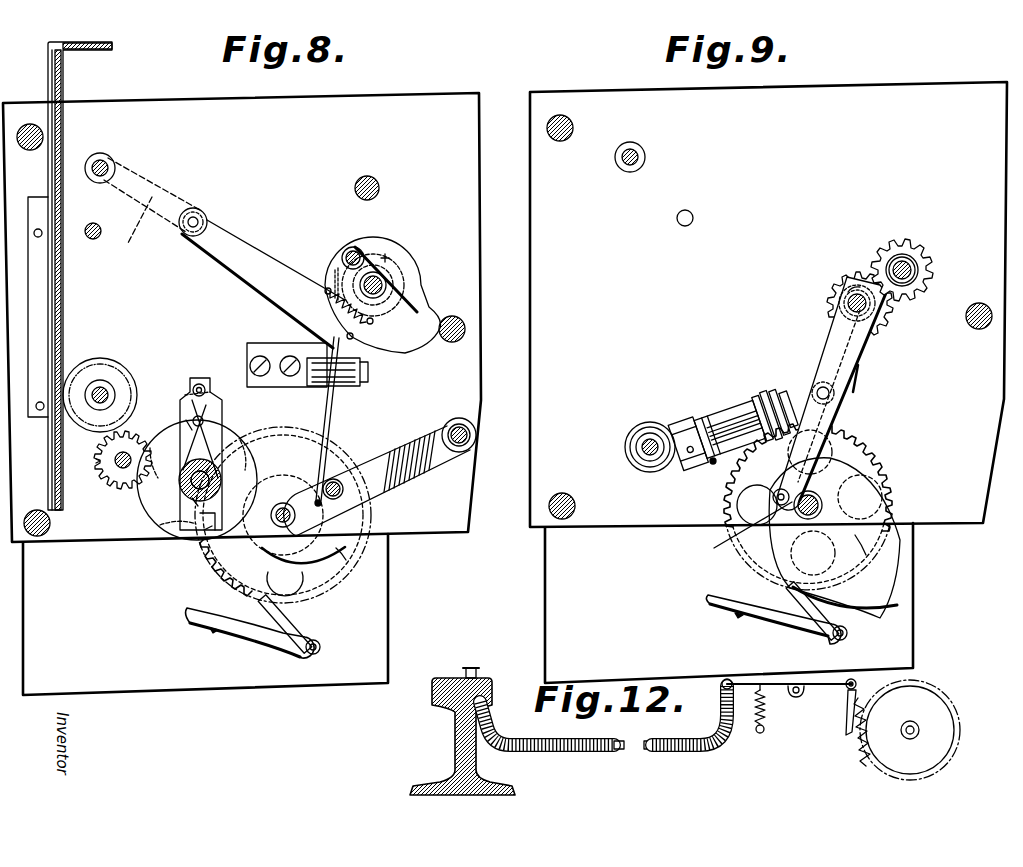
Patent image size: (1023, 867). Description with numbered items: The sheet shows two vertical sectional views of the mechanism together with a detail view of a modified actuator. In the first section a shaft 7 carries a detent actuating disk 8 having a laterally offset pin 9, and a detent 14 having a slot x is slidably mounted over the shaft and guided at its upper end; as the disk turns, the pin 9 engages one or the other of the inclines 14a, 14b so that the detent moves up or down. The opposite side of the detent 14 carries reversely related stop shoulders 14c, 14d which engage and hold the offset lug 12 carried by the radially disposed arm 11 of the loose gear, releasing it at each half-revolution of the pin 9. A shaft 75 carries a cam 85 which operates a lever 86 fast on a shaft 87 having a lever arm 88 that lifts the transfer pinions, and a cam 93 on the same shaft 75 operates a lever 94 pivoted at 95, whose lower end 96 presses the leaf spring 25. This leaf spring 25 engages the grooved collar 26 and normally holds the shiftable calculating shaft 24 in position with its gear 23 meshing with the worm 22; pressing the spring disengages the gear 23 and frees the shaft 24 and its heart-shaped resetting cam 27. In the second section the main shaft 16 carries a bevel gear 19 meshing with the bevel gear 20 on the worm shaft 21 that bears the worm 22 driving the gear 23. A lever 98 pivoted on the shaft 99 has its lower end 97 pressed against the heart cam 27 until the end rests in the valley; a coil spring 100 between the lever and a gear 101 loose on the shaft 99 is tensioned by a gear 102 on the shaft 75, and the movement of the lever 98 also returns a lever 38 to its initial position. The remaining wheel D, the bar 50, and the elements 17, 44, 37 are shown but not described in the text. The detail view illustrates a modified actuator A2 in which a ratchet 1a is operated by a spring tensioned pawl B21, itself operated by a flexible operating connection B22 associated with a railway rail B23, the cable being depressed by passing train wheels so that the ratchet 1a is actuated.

In FIG. 8, the vertical bar 50 is at (48, 78).
In FIG. 8, the wheel D is at (110, 362).
In FIG. 8, the main shaft 16 is at (118, 470).
In FIG. 9, the main shaft 16 is at (650, 458).
In FIG. 8, the pinion gear 17 is at (100, 461).
In FIG. 8, the detent 14 is at (182, 392).
In FIG. 8, the slot x is at (201, 381).
In FIG. 8, the stop shoulder 14c is at (190, 424).
In FIG. 8, the offset lug 12 is at (206, 420).
In FIG. 8, the laterally offset pin 9 is at (212, 426).
In FIG. 8, the radially disposed arm 11 is at (214, 446).
In FIG. 8, the detent actuating disk 8 is at (211, 480).
In FIG. 8, the shaft 7 is at (219, 483).
In FIG. 8, the incline 14a is at (193, 503).
In FIG. 8, the incline 14b is at (196, 525).
In FIG. 8, the stop shoulder 14d is at (206, 533).
In FIG. 8, the pivot stud 44 is at (106, 163).
In FIG. 9, the pivot stud 44 is at (642, 152).
In FIG. 8, the lever arm 88 is at (152, 212).
In FIG. 8, the shaft 87 is at (199, 222).
In FIG. 8, the lever 86 is at (243, 268).
In FIG. 8, the cam 85 is at (418, 303).
In FIG. 8, the shaft 75 is at (388, 278).
In FIG. 9, the shaft 75 is at (918, 270).
In FIG. 8, the cam 93 is at (388, 253).
In FIG. 8, the pivot 95 is at (369, 373).
In FIG. 8, the lever 94 is at (340, 417).
In FIG. 8, the gear 23 is at (316, 586).
In FIG. 9, the gear 23 is at (864, 438).
In FIG. 8, the shiftable calculating shaft 24 is at (292, 528).
In FIG. 9, the shiftable calculating shaft 24 is at (815, 504).
In FIG. 8, the heart-shaped resetting cam 27 is at (340, 556).
In FIG. 9, the heart-shaped resetting cam 27 is at (860, 540).
In FIG. 8, the grooved collar 26 is at (285, 503).
In FIG. 8, the leaf spring 25 is at (412, 466).
In FIG. 8, the lower end 96 is at (324, 506).
In FIG. 8, the lever 38 is at (283, 612).
In FIG. 9, the lever 38 is at (833, 622).
In FIG. 8, the pawl 37 is at (308, 652).
In FIG. 9, the pawl 37 is at (835, 640).
In FIG. 9, the gear 102 is at (917, 253).
In FIG. 9, the shaft 99 is at (884, 312).
In FIG. 9, the coil spring 100 is at (858, 286).
In FIG. 9, the gear 101 is at (846, 283).
In FIG. 9, the lever 98 is at (848, 346).
In FIG. 9, the bevel gear 19 is at (636, 440).
In FIG. 9, the worm shaft 21 is at (713, 428).
In FIG. 9, the bevel gear 20 is at (680, 424).
In FIG. 9, the worm 22 is at (768, 405).
In FIG. 9, the lower end 97 is at (741, 535).
In FIG. 12, the railway rail B23 is at (456, 746).
In FIG. 12, the flexible operating connection B22 is at (626, 748).
In FIG. 12, the modified form of actuator A2 is at (689, 734).
In FIG. 12, the spring tensioned pawl B21 is at (800, 697).
In FIG. 12, the ratchet 1a is at (910, 730).